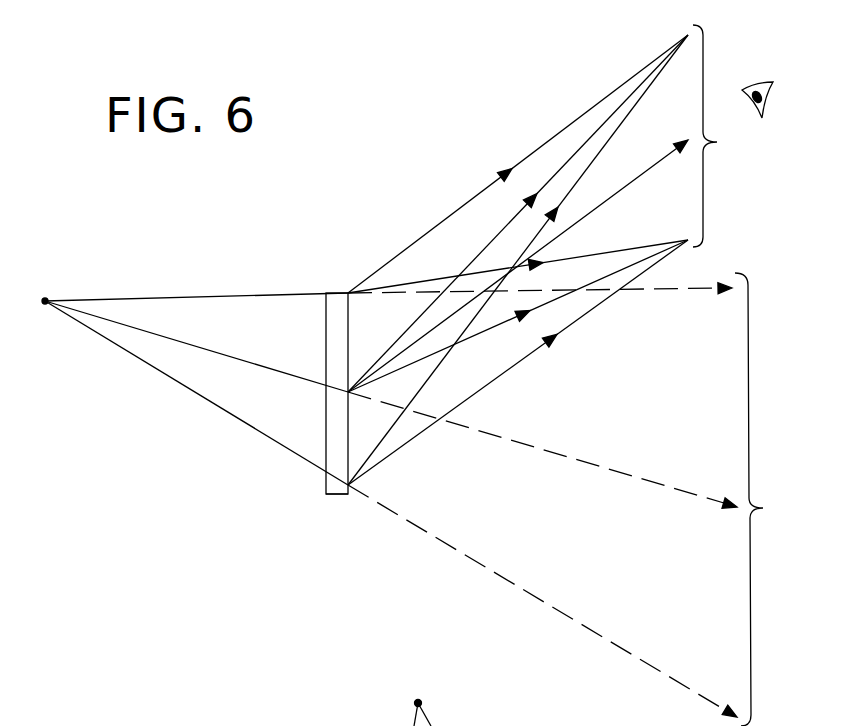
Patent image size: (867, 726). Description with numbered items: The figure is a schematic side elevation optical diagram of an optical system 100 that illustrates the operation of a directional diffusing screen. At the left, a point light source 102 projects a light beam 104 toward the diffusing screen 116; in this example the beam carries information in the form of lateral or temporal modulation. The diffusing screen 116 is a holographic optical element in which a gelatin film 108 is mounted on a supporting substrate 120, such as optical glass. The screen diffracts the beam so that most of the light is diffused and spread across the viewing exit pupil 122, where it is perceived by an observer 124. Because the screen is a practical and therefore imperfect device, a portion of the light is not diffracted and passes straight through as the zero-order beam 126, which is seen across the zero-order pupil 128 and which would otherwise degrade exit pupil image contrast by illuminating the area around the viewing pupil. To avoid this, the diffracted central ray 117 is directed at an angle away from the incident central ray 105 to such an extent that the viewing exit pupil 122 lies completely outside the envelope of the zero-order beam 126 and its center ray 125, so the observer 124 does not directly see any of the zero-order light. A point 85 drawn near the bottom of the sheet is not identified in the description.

The optical system 100 is at (360, 150).
The point light source 102 is at (46, 299).
The light beam 104 is at (194, 297).
The central ray 105 is at (258, 367).
The gelatin film 108 is at (348, 457).
The diffusing screen 116 is at (352, 248).
The central ray 117 is at (609, 198).
The supporting substrate 120 is at (334, 495).
The viewing exit pupil 122 is at (706, 38).
The observer 124 is at (743, 136).
The center ray 125 is at (603, 462).
The zero-order beam 126 is at (563, 614).
The zero-order pupil 128 is at (749, 421).
The reference point 85 is at (418, 703).